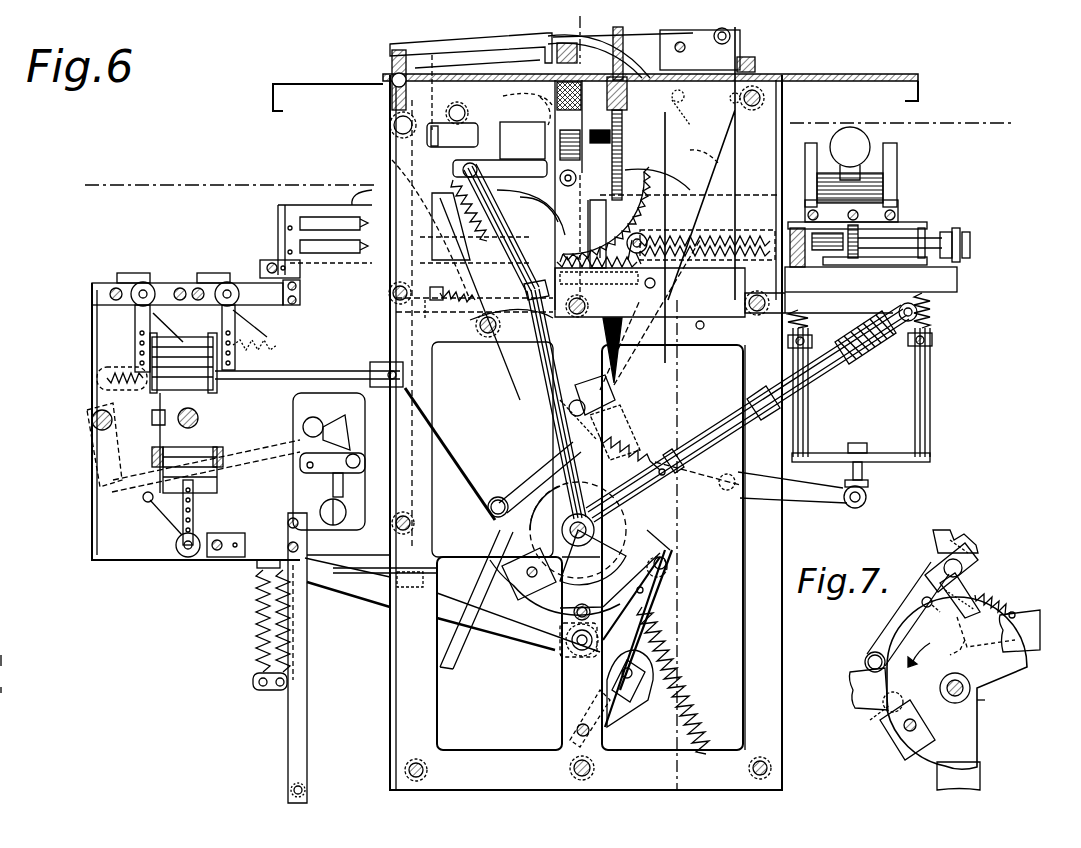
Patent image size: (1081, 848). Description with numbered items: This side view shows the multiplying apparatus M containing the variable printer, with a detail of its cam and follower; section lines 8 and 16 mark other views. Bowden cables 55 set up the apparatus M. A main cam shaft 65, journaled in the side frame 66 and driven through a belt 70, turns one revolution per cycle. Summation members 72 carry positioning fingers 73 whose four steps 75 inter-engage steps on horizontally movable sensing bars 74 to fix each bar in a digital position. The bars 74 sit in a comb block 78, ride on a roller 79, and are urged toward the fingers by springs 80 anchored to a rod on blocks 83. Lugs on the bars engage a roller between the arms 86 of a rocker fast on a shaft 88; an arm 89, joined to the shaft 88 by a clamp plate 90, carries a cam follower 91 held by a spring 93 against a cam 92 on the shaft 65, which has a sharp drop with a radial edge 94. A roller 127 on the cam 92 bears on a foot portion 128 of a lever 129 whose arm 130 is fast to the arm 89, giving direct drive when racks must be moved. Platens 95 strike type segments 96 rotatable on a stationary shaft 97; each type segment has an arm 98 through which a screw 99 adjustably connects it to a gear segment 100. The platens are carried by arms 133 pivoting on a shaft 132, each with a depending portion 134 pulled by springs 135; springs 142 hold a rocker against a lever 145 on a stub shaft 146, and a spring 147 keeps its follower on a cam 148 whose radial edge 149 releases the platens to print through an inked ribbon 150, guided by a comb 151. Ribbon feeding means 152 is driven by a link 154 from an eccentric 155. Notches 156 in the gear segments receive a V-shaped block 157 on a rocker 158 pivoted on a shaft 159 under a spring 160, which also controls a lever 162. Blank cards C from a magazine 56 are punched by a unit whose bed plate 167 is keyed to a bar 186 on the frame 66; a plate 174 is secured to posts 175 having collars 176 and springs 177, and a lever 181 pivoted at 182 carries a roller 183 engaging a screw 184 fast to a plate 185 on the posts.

In FIG. 6, the section line 8- 8 is at (562, 27).
In FIG. 6, the section line 16- 16 is at (85, 198).
In FIG. 6, the Bowden cables 55 is at (137, 343).
In FIG. 6, the magazine 56 is at (897, 176).
In FIG. 6, the main cam shaft 65 is at (568, 525).
In FIG. 7, the main cam shaft 65 is at (960, 704).
In FIG. 6, the side frame 66 is at (780, 114).
In FIG. 7, the side frame 66 is at (976, 548).
In FIG. 6, the belt 70 is at (457, 660).
In FIG. 6, the summation members 72 is at (279, 230).
In FIG. 6, the positioning fingers 73 is at (350, 215).
In FIG. 6, the sensing bars 74 is at (428, 236).
In FIG. 6, the steps 75 is at (366, 190).
In FIG. 6, the comb block 78 is at (738, 312).
In FIG. 6, the roller 79 is at (430, 308).
In FIG. 6, the springs 80 is at (728, 238).
In FIG. 6, the blocks 83 is at (680, 262).
In FIG. 6, the arms 86 is at (618, 346).
In FIG. 6, the shaft 88 is at (598, 391).
In FIG. 7, the shaft 88 is at (982, 556).
In FIG. 6, the arm 89 is at (517, 453).
In FIG. 7, the arm 89 is at (905, 617).
In FIG. 7, the clamp plate 90 is at (955, 530).
In FIG. 6, the cam follower 91 is at (486, 505).
In FIG. 7, the cam follower 91 is at (866, 656).
In FIG. 6, the cam 92 is at (570, 590).
In FIG. 7, the cam 92 is at (860, 687).
In FIG. 6, the spring 93 is at (625, 439).
In FIG. 7, the spring 93 is at (1002, 602).
In FIG. 6, the radially extending edge 94 is at (600, 556).
In FIG. 7, the radially extending edge 94 is at (987, 682).
In FIG. 6, the platens 95 is at (579, 57).
In FIG. 6, the type segments 96 is at (520, 97).
In FIG. 6, the stationary shaft 97 is at (578, 176).
In FIG. 6, the arm 98 is at (611, 137).
In FIG. 6, the screw 99 is at (573, 217).
In FIG. 6, the gear segments 100 is at (660, 193).
In FIG. 7, the roller 127 is at (878, 735).
In FIG. 7, the foot portion 128 is at (939, 673).
In FIG. 6, the lever 129 is at (600, 423).
In FIG. 7, the lever 129 is at (976, 582).
In FIG. 7, the arm 130 is at (925, 587).
In FIG. 6, the shaft 132 is at (392, 76).
In FIG. 6, the arms 133 is at (452, 58).
In FIG. 6, the depending portion 134 is at (440, 34).
In FIG. 6, the springs 135 is at (452, 135).
In FIG. 6, the springs 142 is at (392, 162).
In FIG. 6, the lever 145 is at (390, 126).
In FIG. 6, the stub shaft 146 is at (492, 345).
In FIG. 6, the spring 147 is at (472, 306).
In FIG. 6, the cam 148 is at (653, 583).
In FIG. 6, the radial edge 149 is at (673, 562).
In FIG. 6, the inked ribbon 150 is at (625, 69).
In FIG. 6, the comb 151 is at (507, 38).
In FIG. 6, the ribbon feeding means 152 is at (529, 134).
In FIG. 6, the link 154 is at (530, 328).
In FIG. 6, the eccentric 155 is at (656, 448).
In FIG. 6, the notches 156 is at (694, 160).
In FIG. 6, the V-shaped block 157 is at (666, 208).
In FIG. 6, the rocker 158 is at (712, 172).
In FIG. 6, the shaft 159 is at (732, 118).
In FIG. 6, the spring 160 is at (684, 106).
In FIG. 6, the lever 162 is at (617, 323).
In FIG. 6, the bed plate 167 is at (940, 275).
In FIG. 6, the plate 174 is at (907, 220).
In FIG. 6, the posts 175 is at (810, 396).
In FIG. 6, the collars 176 is at (932, 340).
In FIG. 6, the springs 177 is at (918, 316).
In FIG. 6, the lever 181 is at (722, 547).
In FIG. 6, the pivot 182 is at (735, 471).
In FIG. 6, the roller 183 is at (868, 500).
In FIG. 6, the screw 184 is at (870, 483).
In FIG. 6, the plate 185 is at (883, 457).
In FIG. 6, the bar 186 is at (812, 296).
In FIG. 6, the multiplying mechanism M is at (185, 275).
In FIG. 6, the blank cards C is at (845, 188).